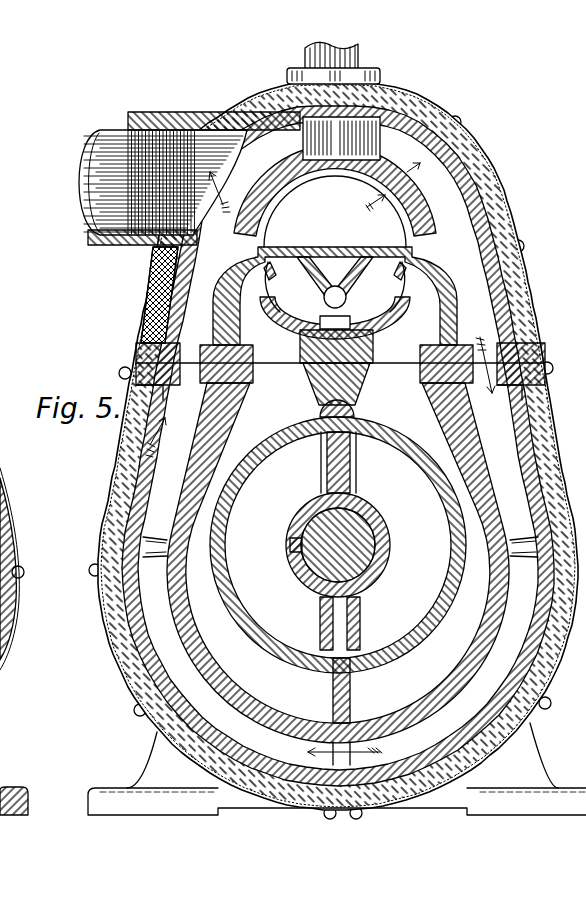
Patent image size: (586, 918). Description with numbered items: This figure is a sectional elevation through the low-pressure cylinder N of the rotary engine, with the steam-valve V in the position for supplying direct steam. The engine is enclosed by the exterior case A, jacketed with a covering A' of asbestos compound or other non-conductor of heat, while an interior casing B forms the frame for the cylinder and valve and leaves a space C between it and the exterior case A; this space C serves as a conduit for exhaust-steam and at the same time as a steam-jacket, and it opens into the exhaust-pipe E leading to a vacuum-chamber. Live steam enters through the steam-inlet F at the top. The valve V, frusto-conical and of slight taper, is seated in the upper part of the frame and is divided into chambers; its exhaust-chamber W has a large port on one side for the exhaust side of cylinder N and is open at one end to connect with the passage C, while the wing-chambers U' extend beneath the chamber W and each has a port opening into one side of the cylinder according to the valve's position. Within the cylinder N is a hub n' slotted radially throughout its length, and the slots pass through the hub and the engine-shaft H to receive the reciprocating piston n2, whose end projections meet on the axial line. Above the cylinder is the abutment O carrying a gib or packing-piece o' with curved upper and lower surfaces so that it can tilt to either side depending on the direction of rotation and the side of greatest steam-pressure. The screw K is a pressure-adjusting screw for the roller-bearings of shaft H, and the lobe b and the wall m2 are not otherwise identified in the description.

The steam-inlet F is at (358, 46).
The jacket covering A' is at (328, 436).
The interior casing B is at (380, 167).
The exhaust space C is at (427, 173).
The steam-valve V is at (440, 245).
The exhaust-chamber W is at (335, 211).
The wing-chambers U' is at (335, 287).
The pressure-adjusting screw K is at (335, 293).
The valve housing lobe b is at (335, 296).
The exhaust-pipe E is at (78, 180).
The exterior case A is at (142, 295).
The abutment O is at (368, 374).
The gib o' is at (349, 407).
The low-pressure cylinder N is at (165, 645).
The engine-shaft H is at (375, 530).
The hub n' is at (343, 545).
The reciprocating piston n2 is at (332, 683).
The adjacent casing wall m2 is at (8, 497).